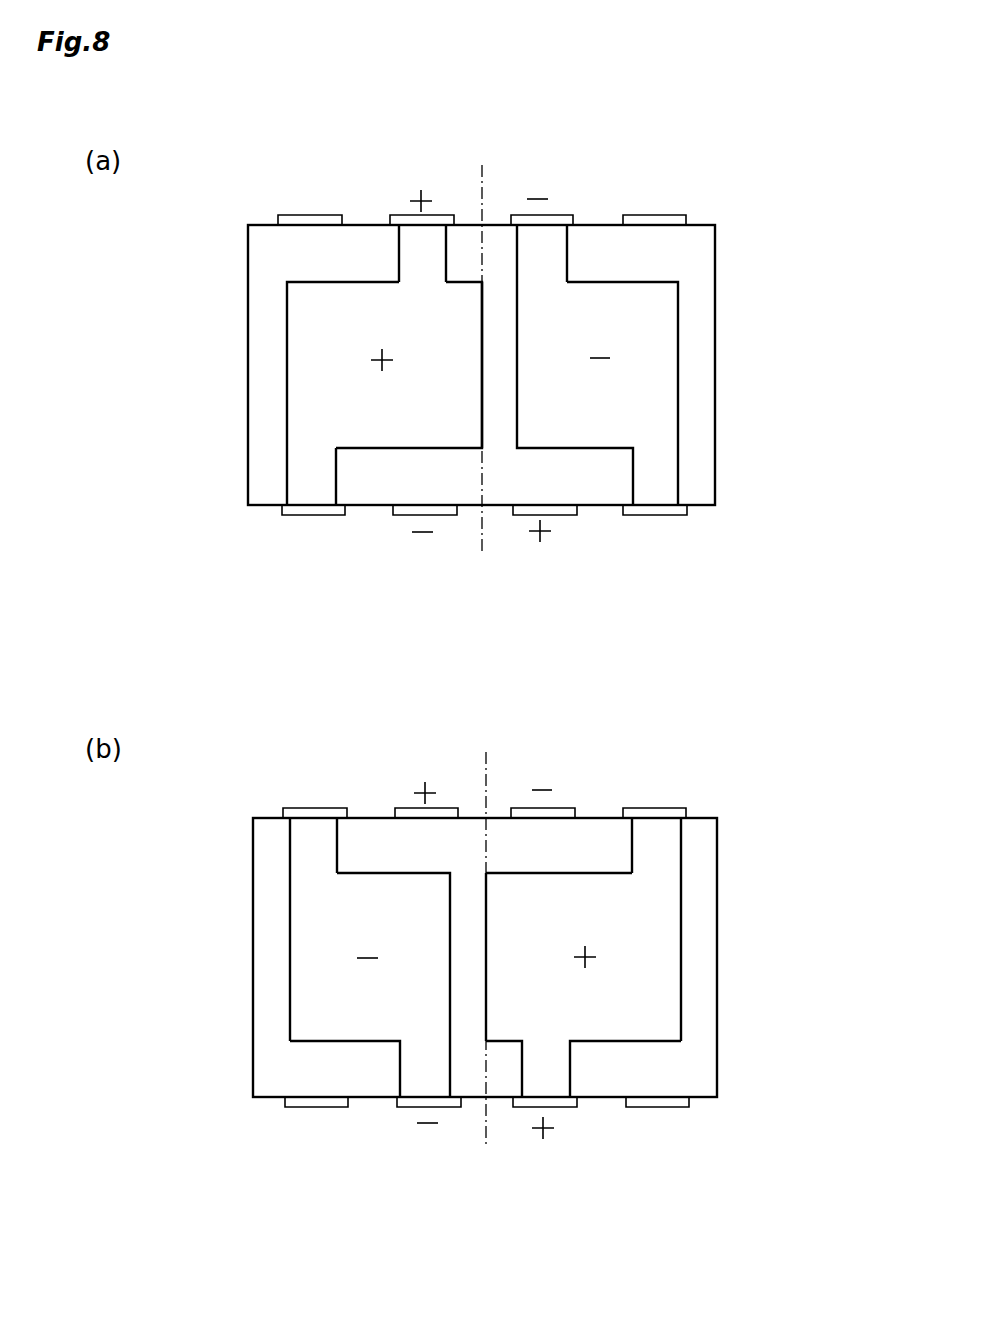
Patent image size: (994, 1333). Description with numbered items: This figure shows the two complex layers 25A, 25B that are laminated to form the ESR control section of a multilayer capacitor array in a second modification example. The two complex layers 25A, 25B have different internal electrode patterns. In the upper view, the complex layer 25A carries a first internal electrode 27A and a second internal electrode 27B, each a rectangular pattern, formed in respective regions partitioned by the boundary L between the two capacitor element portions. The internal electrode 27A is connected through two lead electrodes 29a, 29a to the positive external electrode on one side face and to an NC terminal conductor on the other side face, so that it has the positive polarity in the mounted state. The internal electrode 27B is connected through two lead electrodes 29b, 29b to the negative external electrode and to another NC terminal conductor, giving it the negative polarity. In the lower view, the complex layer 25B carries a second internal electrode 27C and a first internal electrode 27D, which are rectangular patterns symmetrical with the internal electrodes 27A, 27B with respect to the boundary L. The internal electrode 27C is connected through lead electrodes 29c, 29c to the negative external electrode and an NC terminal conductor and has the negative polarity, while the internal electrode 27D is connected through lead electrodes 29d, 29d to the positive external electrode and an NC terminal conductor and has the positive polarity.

The complex layer 25A is at (772, 196).
The complex layer 25B is at (772, 791).
The internal electrode 27A is at (303, 354).
The internal electrode 27B is at (660, 354).
The internal electrode 27C is at (305, 968).
The internal electrode 27D is at (665, 968).
The lead electrode 29a is at (403, 252).
The lead electrode 29b is at (550, 250).
The lead electrode 29c is at (312, 846).
The lead electrode 29d is at (673, 835).